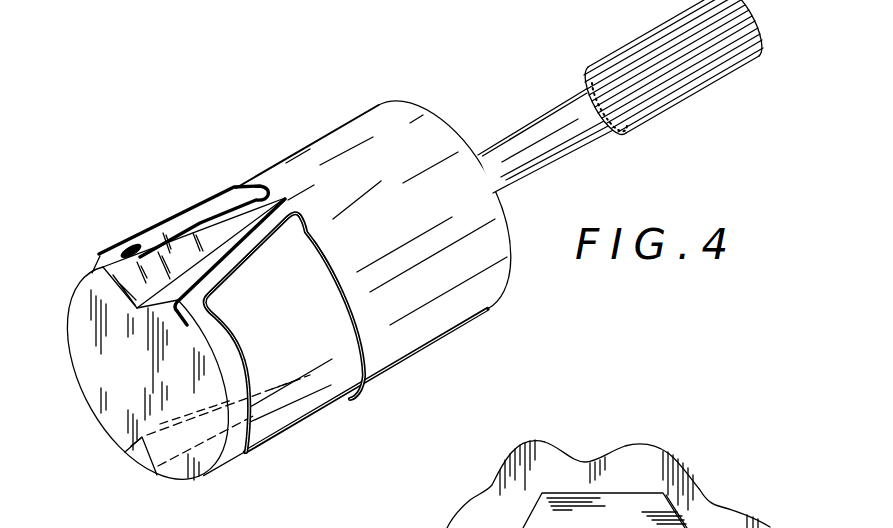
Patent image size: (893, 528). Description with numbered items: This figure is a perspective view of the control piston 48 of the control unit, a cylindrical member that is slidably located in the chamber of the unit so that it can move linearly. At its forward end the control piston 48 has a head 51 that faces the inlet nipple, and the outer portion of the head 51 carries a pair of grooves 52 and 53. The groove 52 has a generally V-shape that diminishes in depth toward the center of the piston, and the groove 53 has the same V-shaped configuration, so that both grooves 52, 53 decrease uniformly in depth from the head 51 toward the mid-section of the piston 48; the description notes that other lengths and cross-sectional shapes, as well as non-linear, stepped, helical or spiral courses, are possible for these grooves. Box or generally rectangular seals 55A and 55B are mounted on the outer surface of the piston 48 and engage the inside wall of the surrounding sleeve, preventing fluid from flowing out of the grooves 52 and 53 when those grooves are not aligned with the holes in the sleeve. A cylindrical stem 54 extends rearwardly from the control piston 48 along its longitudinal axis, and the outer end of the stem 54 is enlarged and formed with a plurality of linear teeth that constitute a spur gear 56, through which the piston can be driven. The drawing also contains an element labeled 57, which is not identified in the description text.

The control piston 48 is at (282, 162).
The head 51 is at (97, 365).
The V-shaped groove 52 is at (147, 277).
The V-shaped groove 53 is at (142, 455).
The cylindrical stem 54 is at (522, 126).
The box seal 55A is at (232, 186).
The box seal 55B is at (345, 254).
The spur gear 56 is at (642, 42).
The resilient pad 57 is at (608, 484).